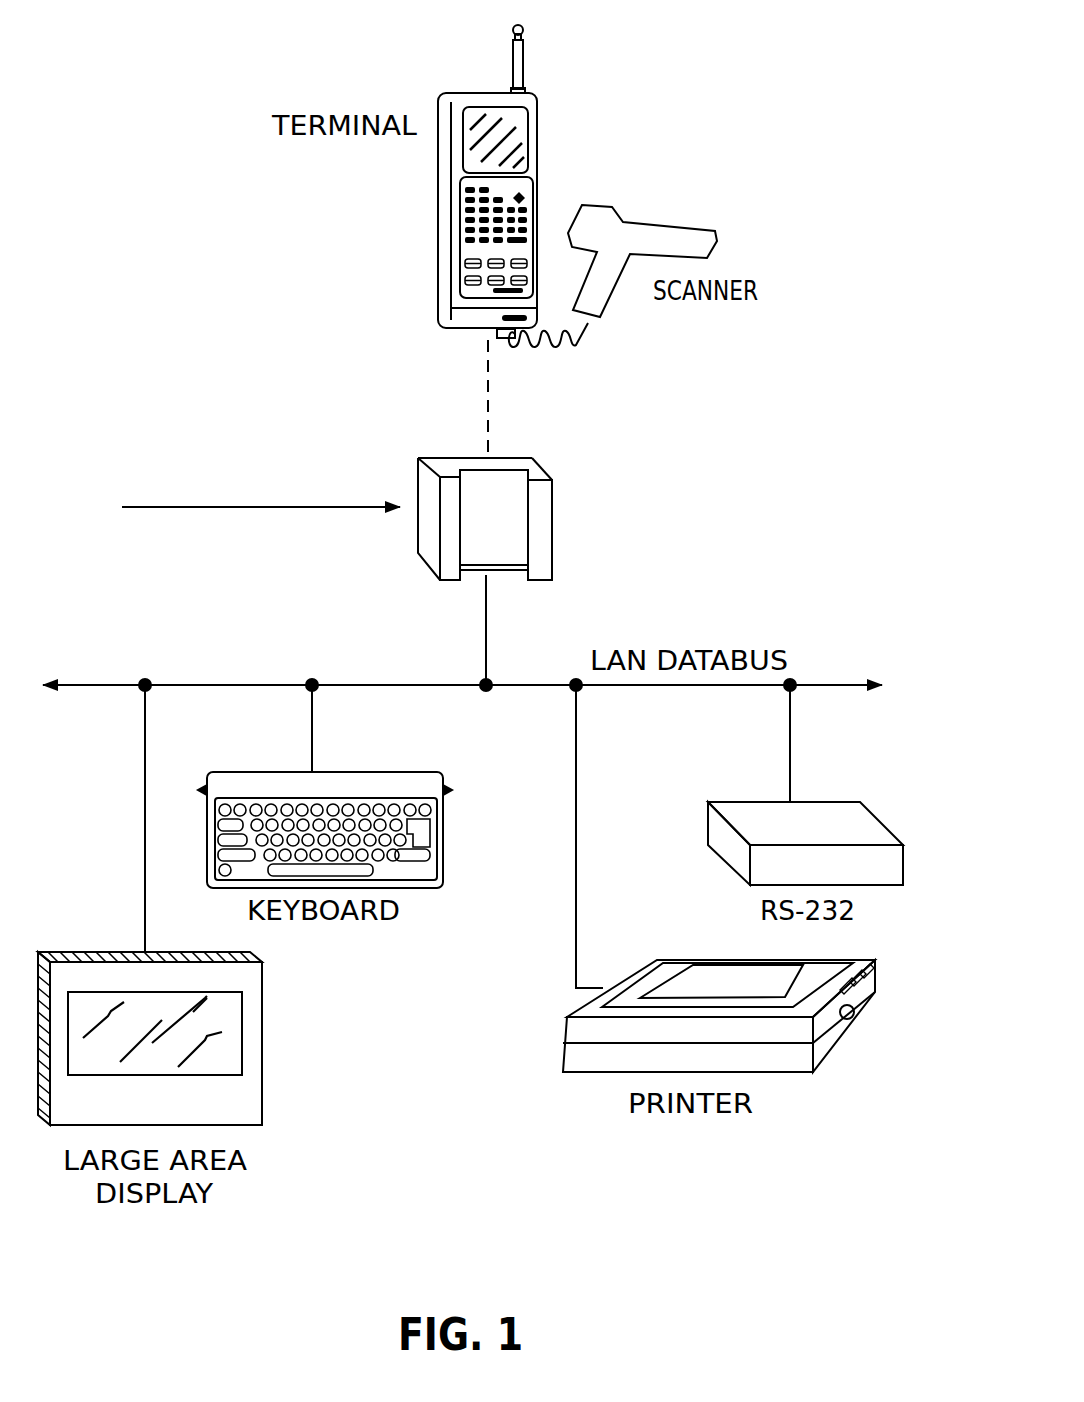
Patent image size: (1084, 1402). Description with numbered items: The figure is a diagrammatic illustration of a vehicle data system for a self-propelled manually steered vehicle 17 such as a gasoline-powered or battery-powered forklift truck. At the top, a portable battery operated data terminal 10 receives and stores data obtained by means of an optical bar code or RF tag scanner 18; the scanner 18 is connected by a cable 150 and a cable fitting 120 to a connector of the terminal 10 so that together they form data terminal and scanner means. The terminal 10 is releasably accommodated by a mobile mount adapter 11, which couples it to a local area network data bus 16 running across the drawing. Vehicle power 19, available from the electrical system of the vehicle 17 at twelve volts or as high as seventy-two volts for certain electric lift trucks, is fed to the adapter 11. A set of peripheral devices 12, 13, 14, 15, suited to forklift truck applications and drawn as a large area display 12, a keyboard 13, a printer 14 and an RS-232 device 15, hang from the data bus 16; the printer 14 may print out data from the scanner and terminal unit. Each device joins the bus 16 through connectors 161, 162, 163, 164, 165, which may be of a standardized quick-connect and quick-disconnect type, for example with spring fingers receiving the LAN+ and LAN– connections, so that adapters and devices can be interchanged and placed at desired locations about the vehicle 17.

The portable battery operated data terminal 10 is at (457, 77).
The adapter 11 is at (413, 480).
The peripheral device 12 is at (270, 1005).
The peripheral device 13 is at (393, 765).
The printer 14 is at (878, 993).
The peripheral device 15 is at (872, 808).
The local area network data bus 16 is at (825, 682).
The self-propelled manually steered vehicle 17 is at (798, 557).
The optical bar code or RF tag scanner 18 is at (667, 207).
The vehicle power 19 is at (247, 508).
The cable fitting 120 is at (489, 332).
The cable 150 is at (557, 350).
The connector 161 is at (139, 692).
The connector 162 is at (306, 692).
The connector 163 is at (572, 690).
The connector 164 is at (482, 689).
The connector 165 is at (786, 688).